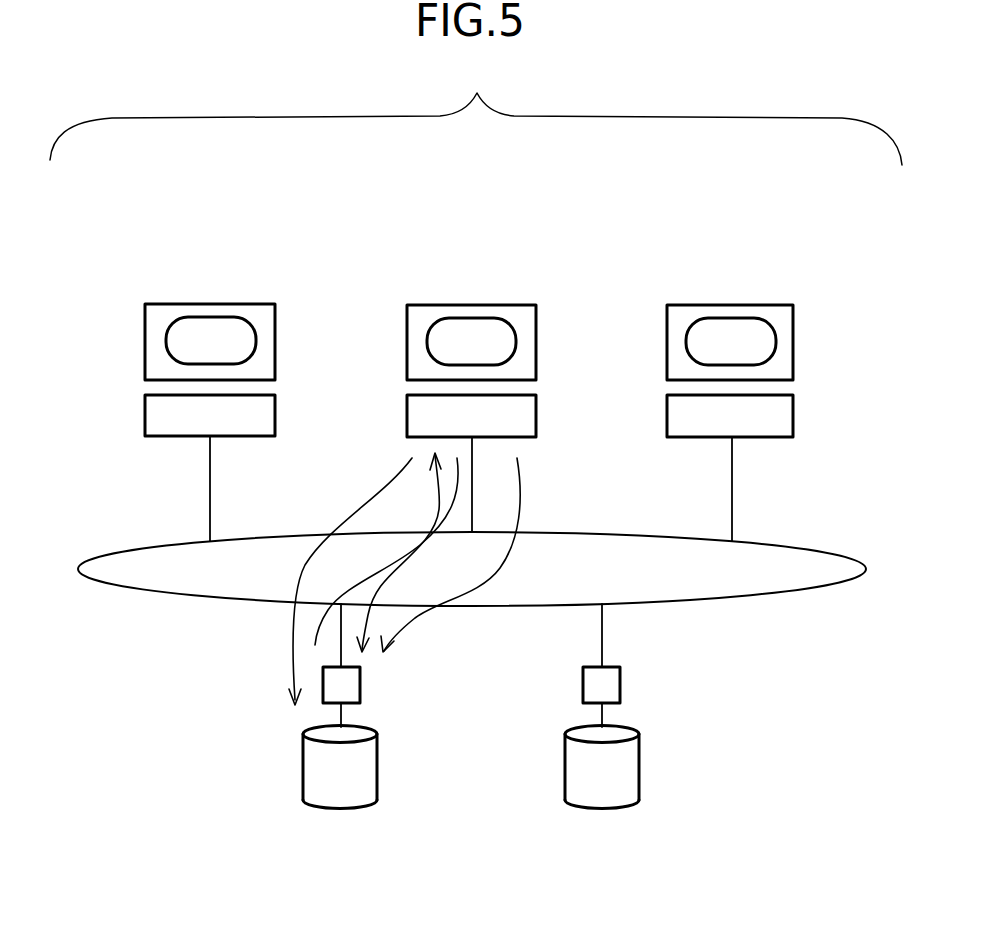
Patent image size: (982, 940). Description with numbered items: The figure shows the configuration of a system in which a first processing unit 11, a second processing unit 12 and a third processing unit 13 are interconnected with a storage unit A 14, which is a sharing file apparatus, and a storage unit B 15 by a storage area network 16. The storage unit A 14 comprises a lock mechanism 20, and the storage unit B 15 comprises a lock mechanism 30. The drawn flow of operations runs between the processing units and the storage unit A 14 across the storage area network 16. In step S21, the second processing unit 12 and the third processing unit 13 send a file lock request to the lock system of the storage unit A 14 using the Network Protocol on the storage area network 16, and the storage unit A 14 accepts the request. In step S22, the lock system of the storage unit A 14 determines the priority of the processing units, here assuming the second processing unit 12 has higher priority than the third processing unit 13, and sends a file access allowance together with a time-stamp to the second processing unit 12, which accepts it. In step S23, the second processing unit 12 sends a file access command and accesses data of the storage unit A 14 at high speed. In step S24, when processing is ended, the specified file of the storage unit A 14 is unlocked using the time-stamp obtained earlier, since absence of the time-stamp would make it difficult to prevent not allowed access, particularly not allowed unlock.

The processing unit (1) 11 is at (215, 304).
The processing unit (2) 12 is at (480, 304).
The processing unit (3) 13 is at (740, 304).
The storage unit (A) 14 is at (338, 813).
The storage unit (B) 15 is at (605, 813).
The storage area network 16 is at (768, 598).
The lock mechanism 20 is at (360, 683).
The lock mechanism 30 is at (620, 683).
The step S21 is at (420, 552).
The step S22 is at (386, 551).
The step S23 is at (350, 576).
The step S24 is at (468, 555).